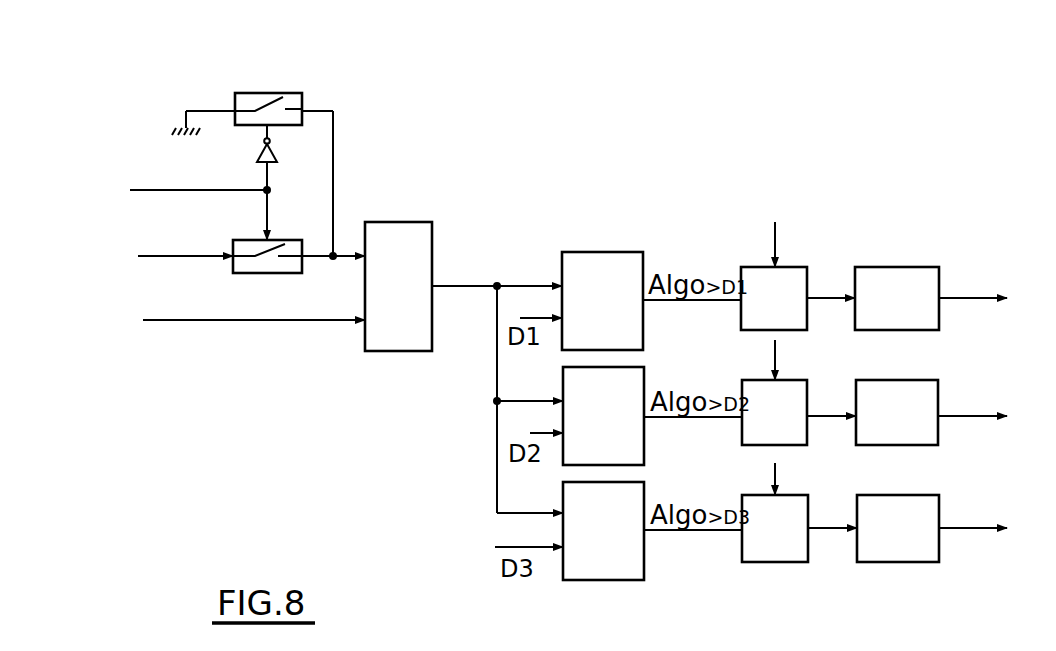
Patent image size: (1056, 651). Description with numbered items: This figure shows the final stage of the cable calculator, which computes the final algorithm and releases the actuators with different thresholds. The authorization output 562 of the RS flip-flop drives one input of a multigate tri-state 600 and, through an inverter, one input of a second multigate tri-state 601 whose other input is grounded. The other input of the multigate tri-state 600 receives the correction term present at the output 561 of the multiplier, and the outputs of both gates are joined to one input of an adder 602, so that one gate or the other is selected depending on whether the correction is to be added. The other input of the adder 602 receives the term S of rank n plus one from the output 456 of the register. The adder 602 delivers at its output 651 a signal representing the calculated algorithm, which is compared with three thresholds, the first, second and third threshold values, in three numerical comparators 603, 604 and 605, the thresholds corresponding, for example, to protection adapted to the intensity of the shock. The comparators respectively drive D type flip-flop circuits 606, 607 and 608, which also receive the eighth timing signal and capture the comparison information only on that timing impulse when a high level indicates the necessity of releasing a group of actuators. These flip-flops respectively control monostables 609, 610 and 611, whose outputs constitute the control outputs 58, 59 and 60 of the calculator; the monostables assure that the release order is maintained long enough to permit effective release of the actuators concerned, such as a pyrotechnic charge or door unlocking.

The multigate tri-state 601 is at (296, 99).
The output of the RS flip-flop circuit 562 is at (187, 190).
The multigate tri-state 600 is at (280, 273).
The output of the multiplier 561 is at (140, 262).
The output of the register 456 is at (194, 321).
The adder 602 is at (405, 222).
The output of the adder 651 is at (469, 286).
The numerical comparator 603 is at (643, 320).
The numerical comparator 604 is at (644, 430).
The numerical comparator 605 is at (644, 565).
The D type flip-flop circuit 606 is at (805, 322).
The D type flip-flop circuit 607 is at (805, 430).
The D type flip-flop circuit 608 is at (805, 548).
The monostable 609 is at (935, 322).
The monostable 610 is at (935, 430).
The monostable 611 is at (935, 552).
The control output 58 is at (965, 298).
The control output 59 is at (986, 412).
The control output 60 is at (984, 526).